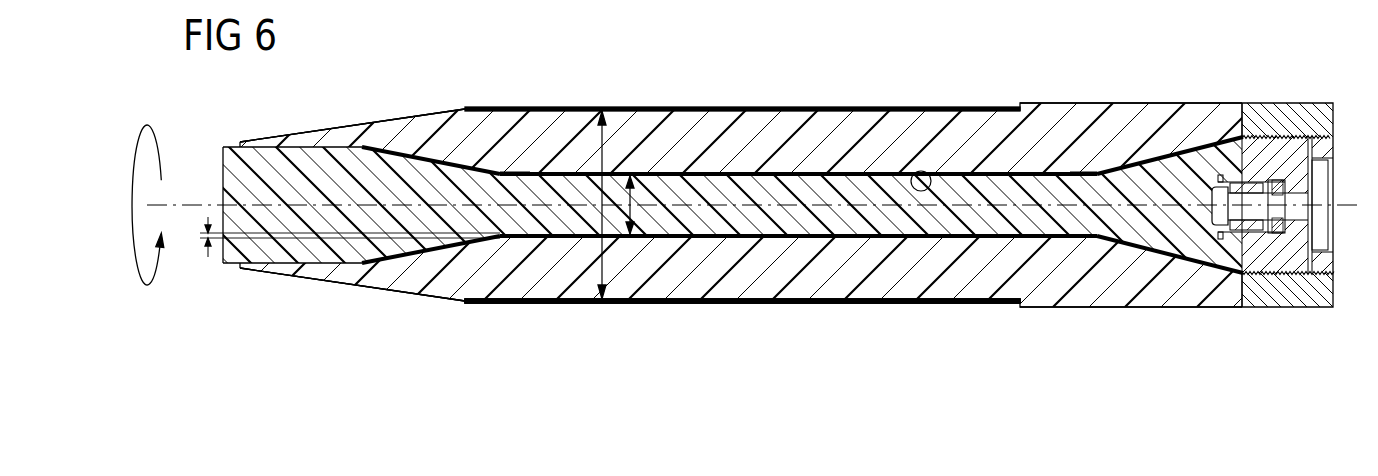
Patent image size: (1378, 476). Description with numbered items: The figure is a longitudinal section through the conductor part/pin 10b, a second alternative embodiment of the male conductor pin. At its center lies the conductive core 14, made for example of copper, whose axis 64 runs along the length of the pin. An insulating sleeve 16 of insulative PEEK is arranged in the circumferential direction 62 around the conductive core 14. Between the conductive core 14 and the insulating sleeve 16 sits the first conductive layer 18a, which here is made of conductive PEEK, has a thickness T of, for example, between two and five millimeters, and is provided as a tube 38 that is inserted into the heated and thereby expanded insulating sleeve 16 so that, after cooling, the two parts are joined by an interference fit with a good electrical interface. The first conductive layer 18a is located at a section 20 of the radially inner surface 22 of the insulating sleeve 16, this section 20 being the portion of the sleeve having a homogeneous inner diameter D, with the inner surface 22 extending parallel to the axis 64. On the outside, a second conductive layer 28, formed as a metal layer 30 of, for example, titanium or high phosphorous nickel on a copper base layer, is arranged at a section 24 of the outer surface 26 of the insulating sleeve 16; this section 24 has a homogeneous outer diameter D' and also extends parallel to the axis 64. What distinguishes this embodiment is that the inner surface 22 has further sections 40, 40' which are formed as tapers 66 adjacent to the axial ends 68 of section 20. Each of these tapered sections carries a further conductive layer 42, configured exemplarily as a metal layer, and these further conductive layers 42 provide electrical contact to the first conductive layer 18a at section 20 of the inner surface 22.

The conductor part/pin 10b is at (620, 92).
The conductive core 14 is at (300, 165).
The insulating sleeve 16 is at (855, 128).
The first conductive layer 18a is at (558, 237).
The section 20 is at (688, 172).
The inner surface 22 is at (915, 176).
The section 24 is at (680, 303).
The outer surface 26 is at (792, 303).
The second conductive layer 28 is at (862, 303).
The metal layer 30 is at (862, 303).
The tube 38 is at (782, 173).
The further section 40 is at (1132, 172).
The further section 40' is at (352, 169).
The further conductive layer 42 is at (394, 152).
The circumferential direction 62 is at (136, 262).
The axis 64 is at (187, 207).
The taper 66 is at (463, 166).
The axial end 68 is at (513, 155).
The thickness T is at (343, 237).
The inner diameter D is at (638, 270).
The outer diameter D' is at (590, 238).